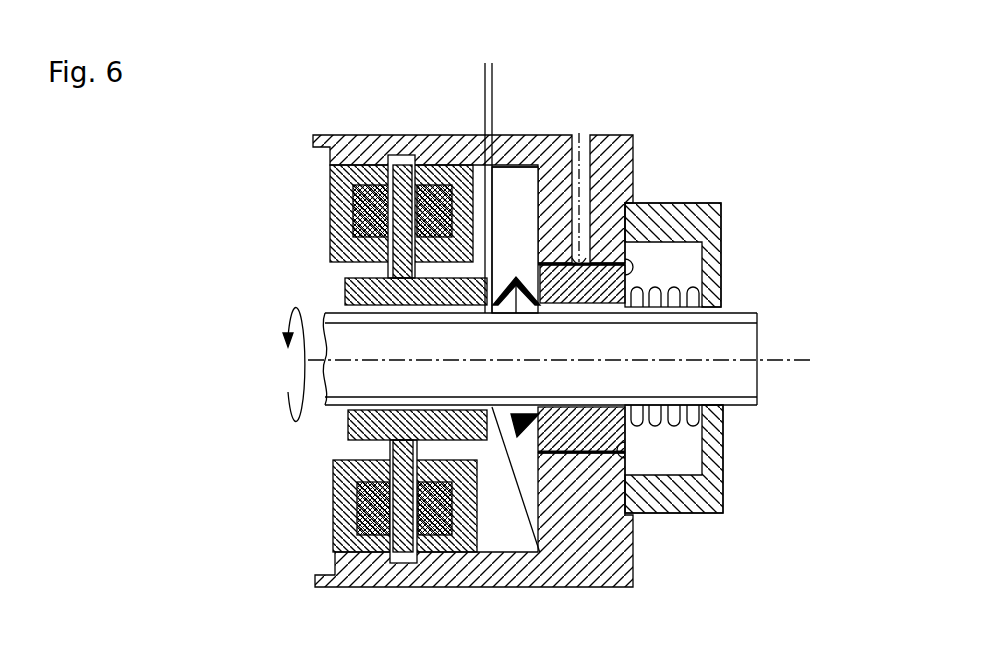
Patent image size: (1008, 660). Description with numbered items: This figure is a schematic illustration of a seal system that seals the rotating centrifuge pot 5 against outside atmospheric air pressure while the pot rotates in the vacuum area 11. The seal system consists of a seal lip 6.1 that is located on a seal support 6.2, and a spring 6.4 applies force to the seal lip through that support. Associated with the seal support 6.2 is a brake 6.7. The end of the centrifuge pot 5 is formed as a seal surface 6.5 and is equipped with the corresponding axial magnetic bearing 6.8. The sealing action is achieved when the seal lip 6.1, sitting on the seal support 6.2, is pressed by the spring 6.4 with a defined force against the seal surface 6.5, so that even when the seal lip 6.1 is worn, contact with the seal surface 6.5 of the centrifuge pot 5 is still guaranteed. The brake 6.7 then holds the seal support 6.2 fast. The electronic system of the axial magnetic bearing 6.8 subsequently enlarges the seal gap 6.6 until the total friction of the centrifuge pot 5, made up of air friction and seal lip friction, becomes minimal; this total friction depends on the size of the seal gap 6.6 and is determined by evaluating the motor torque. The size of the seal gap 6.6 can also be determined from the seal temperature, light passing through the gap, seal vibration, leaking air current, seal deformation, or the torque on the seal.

The centrifuge pot 5 is at (352, 423).
The vacuum area 11 is at (516, 240).
The seal lip 6.1 is at (543, 455).
The seal support 6.2 is at (518, 390).
The spring 6.4 is at (680, 430).
The seal surface 6.5 is at (540, 553).
The seal gap 6.6 is at (527, 78).
The brake 6.7 is at (579, 122).
The axial magnetic bearing 6.8 is at (443, 167).